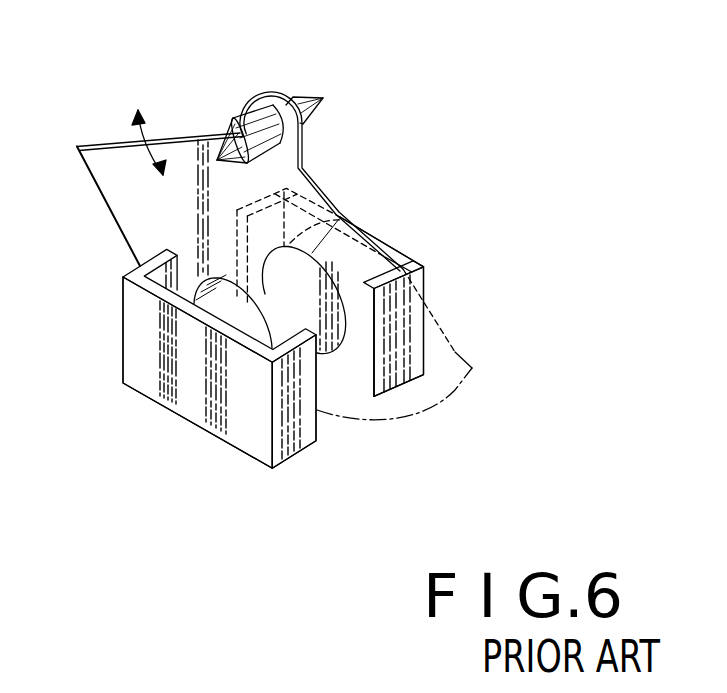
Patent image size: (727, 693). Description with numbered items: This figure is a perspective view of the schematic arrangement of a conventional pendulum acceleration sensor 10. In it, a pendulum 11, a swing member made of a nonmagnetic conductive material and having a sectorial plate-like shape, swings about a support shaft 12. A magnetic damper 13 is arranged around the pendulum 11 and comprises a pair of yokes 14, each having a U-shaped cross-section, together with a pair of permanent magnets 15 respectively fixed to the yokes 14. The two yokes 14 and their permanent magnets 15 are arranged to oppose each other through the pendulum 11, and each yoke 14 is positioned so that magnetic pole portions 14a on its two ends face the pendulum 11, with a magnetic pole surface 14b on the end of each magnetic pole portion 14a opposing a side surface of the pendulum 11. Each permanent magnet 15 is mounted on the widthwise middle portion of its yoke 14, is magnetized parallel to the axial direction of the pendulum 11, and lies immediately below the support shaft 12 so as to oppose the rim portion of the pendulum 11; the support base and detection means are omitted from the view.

The pendulum acceleration sensor 10 is at (397, 211).
The pendulum 11 is at (321, 188).
The support shaft 12 is at (312, 95).
The magnetic damper 13 is at (152, 410).
The yoke 14 is at (152, 345).
The magnetic pole portion 14a is at (300, 437).
The magnetic pole surface 14b is at (380, 345).
The permanent magnet 15 is at (247, 317).